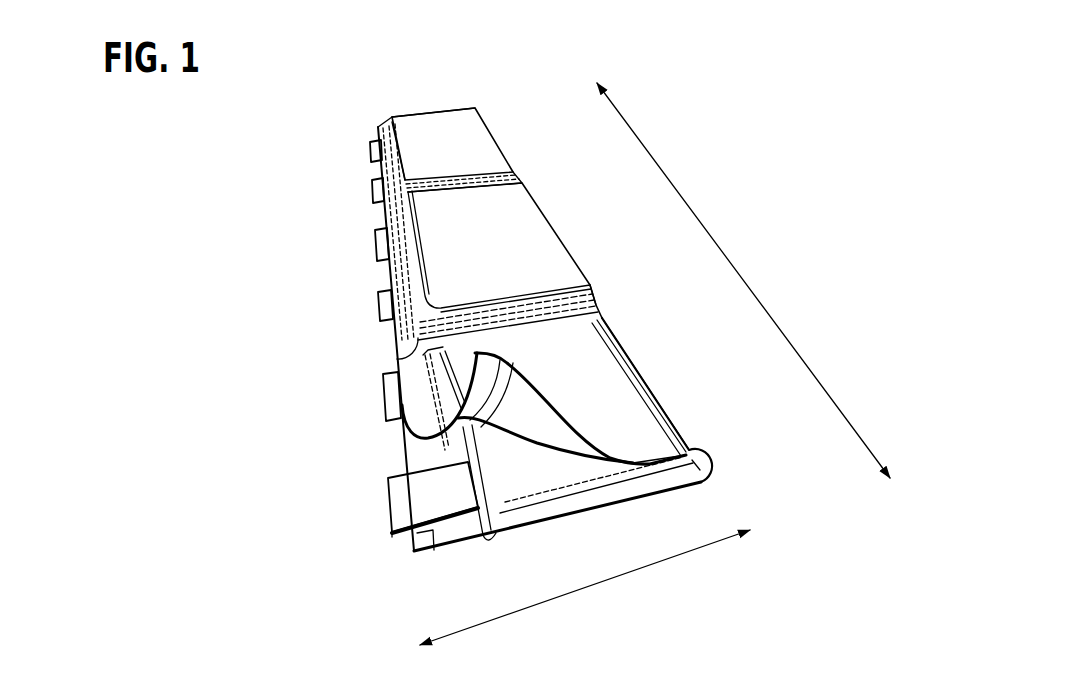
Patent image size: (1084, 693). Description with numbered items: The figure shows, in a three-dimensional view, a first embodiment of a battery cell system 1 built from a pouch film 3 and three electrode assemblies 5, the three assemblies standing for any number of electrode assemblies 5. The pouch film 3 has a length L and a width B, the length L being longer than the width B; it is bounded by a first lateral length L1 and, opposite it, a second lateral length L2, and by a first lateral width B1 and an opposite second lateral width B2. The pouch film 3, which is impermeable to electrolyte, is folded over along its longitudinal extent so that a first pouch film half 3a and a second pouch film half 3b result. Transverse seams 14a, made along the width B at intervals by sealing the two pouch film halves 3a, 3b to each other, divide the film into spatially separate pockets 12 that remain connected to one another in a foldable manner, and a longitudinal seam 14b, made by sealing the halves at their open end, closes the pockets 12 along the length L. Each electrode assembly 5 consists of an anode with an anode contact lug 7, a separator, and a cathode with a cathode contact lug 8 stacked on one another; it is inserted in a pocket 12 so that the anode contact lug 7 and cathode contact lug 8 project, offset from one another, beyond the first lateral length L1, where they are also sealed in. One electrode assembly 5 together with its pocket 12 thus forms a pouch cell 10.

The battery cell system 1 is at (345, 147).
The pouch film 3 is at (503, 203).
The first pouch film half 3a is at (620, 400).
The second pouch film half 3b is at (693, 490).
The electrode assembly 5 is at (537, 473).
The anode contact lug 7 is at (410, 498).
The cathode contact lug 8 is at (393, 403).
The pouch cell 10 is at (499, 136).
The pocket 12 is at (430, 162).
The transverse seam 14a is at (420, 343).
The longitudinal seam 14b is at (400, 277).
The length L is at (743, 280).
The first lateral length L1 is at (383, 218).
The second lateral length L2 is at (580, 287).
The width B is at (585, 587).
The first lateral width B1 is at (427, 116).
The second lateral width B2 is at (667, 493).